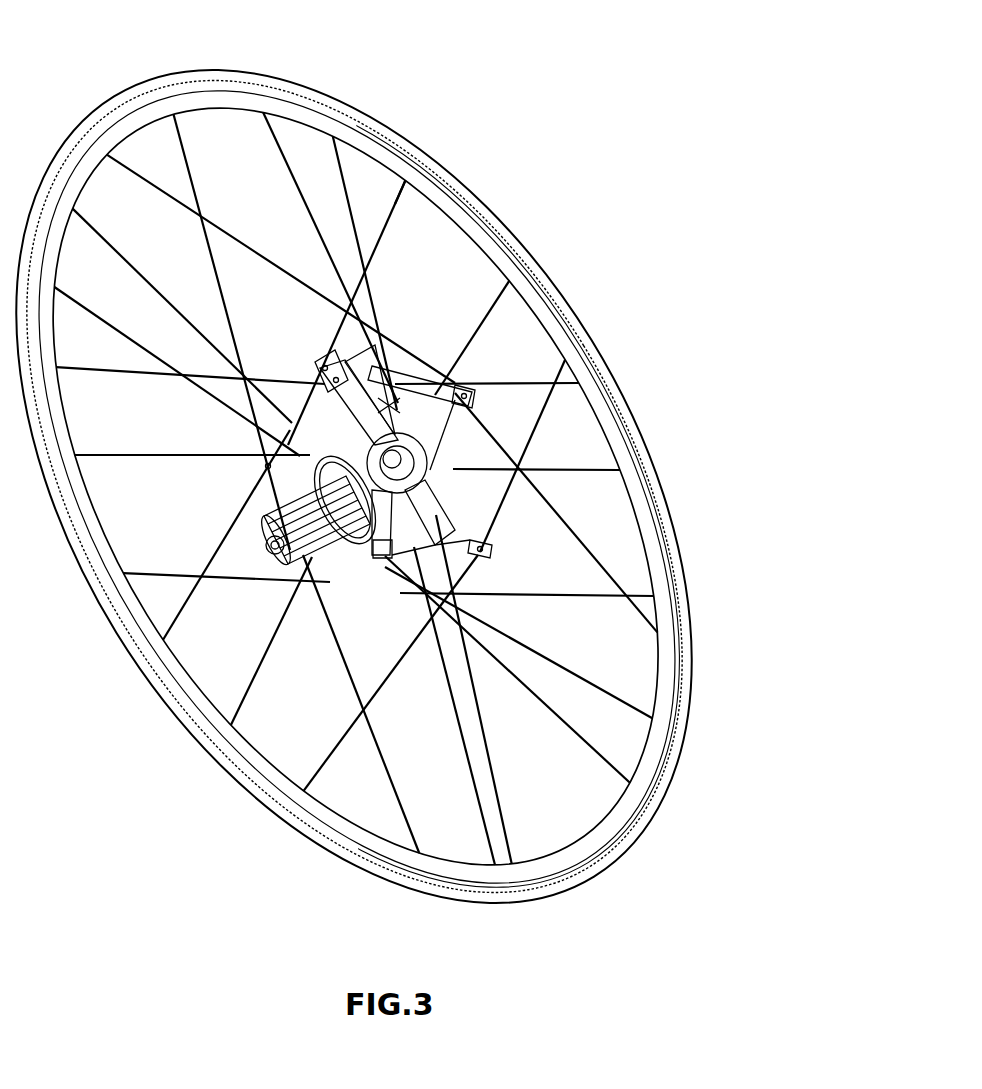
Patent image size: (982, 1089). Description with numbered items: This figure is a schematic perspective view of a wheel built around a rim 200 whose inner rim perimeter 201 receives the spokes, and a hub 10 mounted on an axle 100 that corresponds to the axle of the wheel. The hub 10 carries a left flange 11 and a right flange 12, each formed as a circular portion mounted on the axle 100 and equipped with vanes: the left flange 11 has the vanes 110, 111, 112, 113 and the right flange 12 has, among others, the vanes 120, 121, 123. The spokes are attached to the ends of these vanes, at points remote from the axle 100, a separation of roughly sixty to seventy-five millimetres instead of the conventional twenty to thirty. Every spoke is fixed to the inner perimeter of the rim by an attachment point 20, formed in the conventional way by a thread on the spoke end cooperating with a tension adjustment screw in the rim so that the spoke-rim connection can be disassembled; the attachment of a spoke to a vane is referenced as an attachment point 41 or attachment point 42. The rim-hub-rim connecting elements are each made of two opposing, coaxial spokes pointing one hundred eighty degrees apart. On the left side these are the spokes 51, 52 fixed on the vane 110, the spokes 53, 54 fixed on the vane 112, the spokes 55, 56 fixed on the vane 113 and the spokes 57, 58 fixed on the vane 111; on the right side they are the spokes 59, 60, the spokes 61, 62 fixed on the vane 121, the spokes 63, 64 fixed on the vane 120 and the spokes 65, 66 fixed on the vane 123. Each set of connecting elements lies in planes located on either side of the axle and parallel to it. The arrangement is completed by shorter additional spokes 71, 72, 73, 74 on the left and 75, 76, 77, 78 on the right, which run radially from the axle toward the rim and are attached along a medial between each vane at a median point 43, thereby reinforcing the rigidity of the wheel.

The rim 200 is at (348, 88).
The inner rim perimeter 201 is at (452, 180).
The attachment point 20 is at (255, 118).
The hub 10 is at (338, 580).
The left flange 11 is at (352, 588).
The right flange 12 is at (465, 437).
The attachment point 41 is at (485, 548).
The attachment point 42 is at (322, 358).
The median point 43 is at (415, 395).
The axle 100 is at (267, 553).
The vane 110 is at (447, 548).
The vane 111 is at (385, 565).
The vane 112 is at (290, 478).
The vane 113 is at (282, 400).
The vane 120 is at (450, 390).
The vane 121 is at (440, 470).
The vane 123 is at (357, 377).
The spoke 51 is at (383, 170).
The spoke 52 is at (497, 757).
The spoke 53 is at (203, 263).
The spoke 54 is at (395, 758).
The spoke 55 is at (112, 382).
The spoke 56 is at (537, 463).
The spoke 57 is at (147, 583).
The spoke 58 is at (587, 600).
The spoke 59 is at (202, 578).
The spoke 60 is at (400, 202).
The spoke 61 is at (497, 375).
The spoke 62 is at (310, 780).
The spoke 63 is at (147, 160).
The spoke 64 is at (615, 566).
The spoke 65 is at (68, 290).
The spoke 66 is at (640, 815).
The additional spoke 71 is at (460, 850).
The additional spoke 72 is at (283, 147).
The additional spoke 73 is at (620, 470).
The additional spoke 74 is at (150, 467).
The additional spoke 75 is at (500, 292).
The additional spoke 76 is at (240, 700).
The additional spoke 77 is at (100, 208).
The additional spoke 78 is at (630, 723).